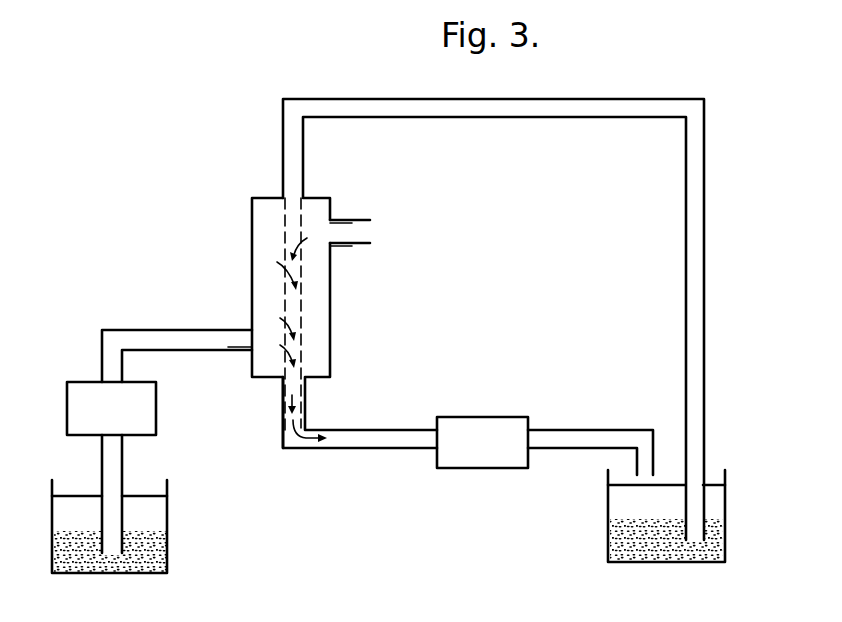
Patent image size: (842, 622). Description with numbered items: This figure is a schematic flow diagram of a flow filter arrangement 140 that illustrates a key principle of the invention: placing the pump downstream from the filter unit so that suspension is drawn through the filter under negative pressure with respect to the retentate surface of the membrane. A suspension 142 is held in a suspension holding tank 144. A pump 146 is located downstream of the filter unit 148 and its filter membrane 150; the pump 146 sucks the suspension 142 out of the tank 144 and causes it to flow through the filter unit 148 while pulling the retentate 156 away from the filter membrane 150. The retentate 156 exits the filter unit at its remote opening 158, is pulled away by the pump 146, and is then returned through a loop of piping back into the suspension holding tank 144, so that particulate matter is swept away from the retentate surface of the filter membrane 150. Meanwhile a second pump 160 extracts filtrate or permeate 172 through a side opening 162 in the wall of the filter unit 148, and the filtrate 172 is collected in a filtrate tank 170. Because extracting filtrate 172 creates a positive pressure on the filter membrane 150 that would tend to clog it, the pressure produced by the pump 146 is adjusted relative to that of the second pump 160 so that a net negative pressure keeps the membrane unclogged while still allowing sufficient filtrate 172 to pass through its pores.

The flow filter arrangement 140 is at (714, 196).
The suspension 142 is at (622, 538).
The suspension holding tank 144 is at (725, 511).
The pump 146 is at (497, 417).
The filter unit 148 is at (331, 312).
The filter membrane 150 is at (286, 250).
The retentate 156 is at (302, 424).
The remote opening 158 is at (283, 384).
The second pump 160 is at (82, 382).
The side opening 162 is at (237, 328).
The filtrate tank 170 is at (167, 512).
The filtrate 172 is at (147, 557).